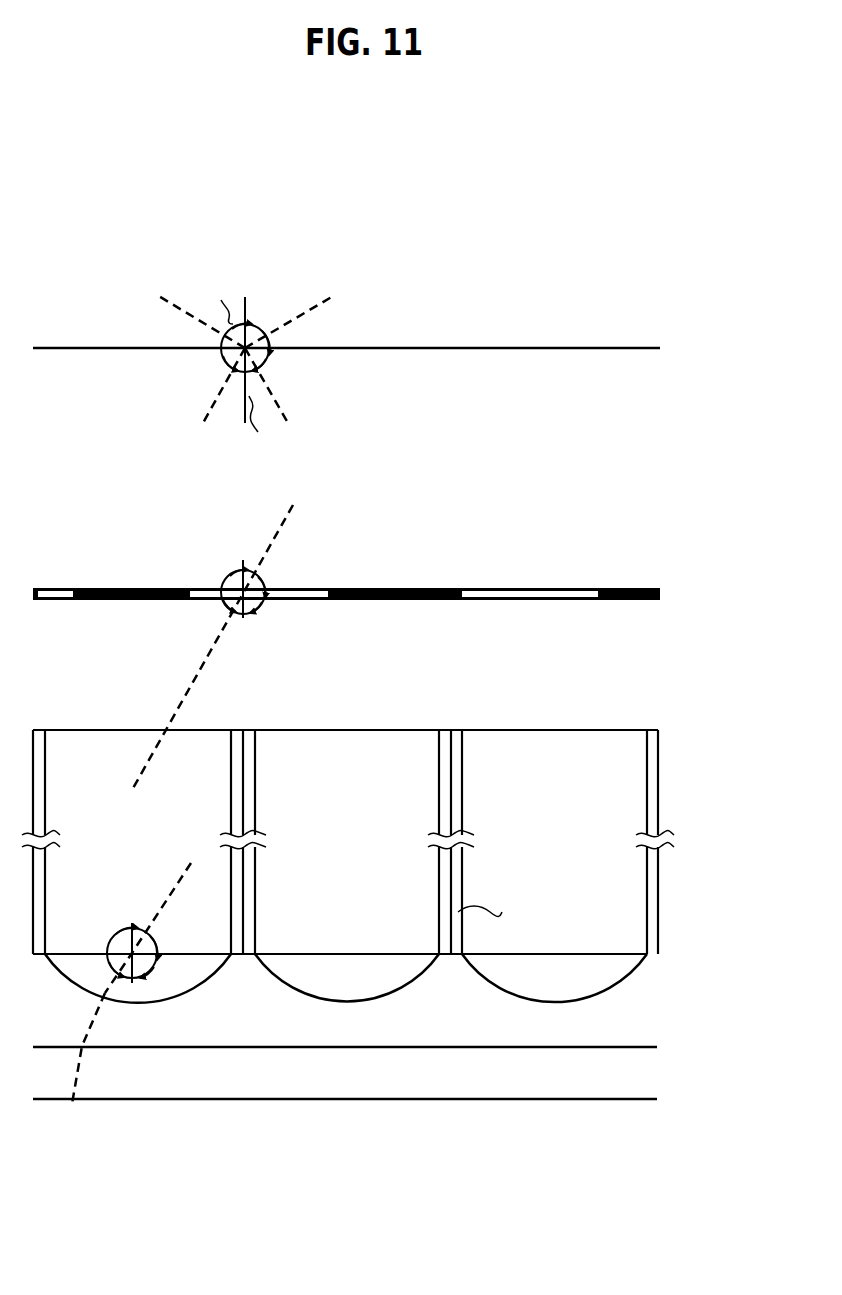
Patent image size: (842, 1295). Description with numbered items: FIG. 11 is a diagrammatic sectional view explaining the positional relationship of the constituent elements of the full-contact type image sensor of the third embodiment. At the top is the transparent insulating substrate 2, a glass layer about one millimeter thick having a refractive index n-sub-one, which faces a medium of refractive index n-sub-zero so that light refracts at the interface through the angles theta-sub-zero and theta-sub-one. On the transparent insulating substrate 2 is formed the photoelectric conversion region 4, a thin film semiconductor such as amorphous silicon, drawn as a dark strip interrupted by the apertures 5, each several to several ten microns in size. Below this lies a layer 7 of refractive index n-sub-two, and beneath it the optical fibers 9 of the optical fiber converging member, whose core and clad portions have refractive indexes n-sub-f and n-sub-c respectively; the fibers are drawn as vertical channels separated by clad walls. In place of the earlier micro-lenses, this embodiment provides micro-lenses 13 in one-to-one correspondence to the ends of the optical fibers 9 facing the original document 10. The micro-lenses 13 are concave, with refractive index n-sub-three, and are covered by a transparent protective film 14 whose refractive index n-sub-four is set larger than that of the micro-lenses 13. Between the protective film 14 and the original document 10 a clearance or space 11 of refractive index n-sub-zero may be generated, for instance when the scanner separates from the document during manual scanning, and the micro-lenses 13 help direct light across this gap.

The transparent insulating substrate 2 is at (634, 470).
The photoelectric conversion region 4 is at (633, 589).
The aperture 5 is at (531, 589).
The buffer layer 7 is at (632, 667).
The optical fiber 9 is at (622, 782).
The original document 10 is at (623, 1103).
The clearance or space 11 is at (622, 1075).
The micro-lens 13 is at (605, 975).
The transparent protective film 14 is at (622, 1022).